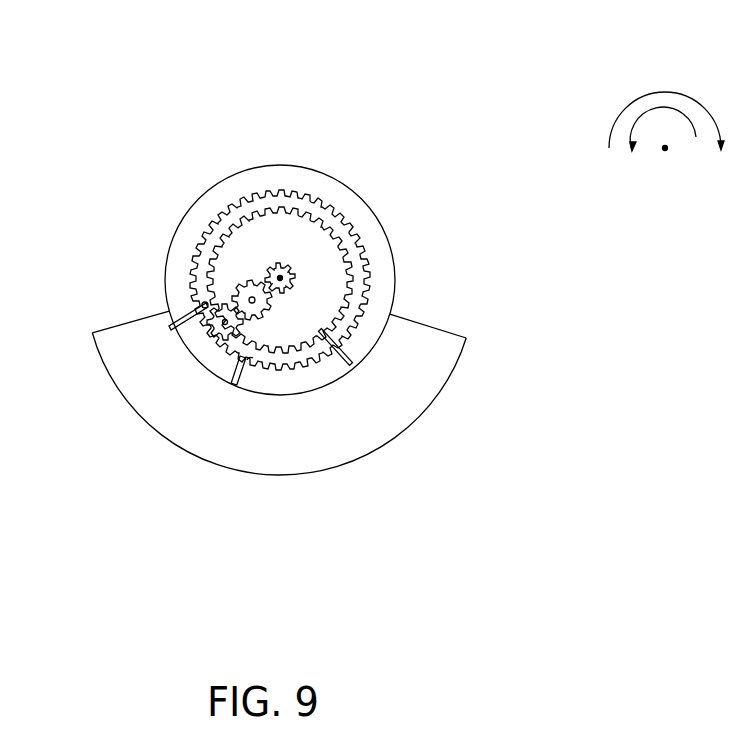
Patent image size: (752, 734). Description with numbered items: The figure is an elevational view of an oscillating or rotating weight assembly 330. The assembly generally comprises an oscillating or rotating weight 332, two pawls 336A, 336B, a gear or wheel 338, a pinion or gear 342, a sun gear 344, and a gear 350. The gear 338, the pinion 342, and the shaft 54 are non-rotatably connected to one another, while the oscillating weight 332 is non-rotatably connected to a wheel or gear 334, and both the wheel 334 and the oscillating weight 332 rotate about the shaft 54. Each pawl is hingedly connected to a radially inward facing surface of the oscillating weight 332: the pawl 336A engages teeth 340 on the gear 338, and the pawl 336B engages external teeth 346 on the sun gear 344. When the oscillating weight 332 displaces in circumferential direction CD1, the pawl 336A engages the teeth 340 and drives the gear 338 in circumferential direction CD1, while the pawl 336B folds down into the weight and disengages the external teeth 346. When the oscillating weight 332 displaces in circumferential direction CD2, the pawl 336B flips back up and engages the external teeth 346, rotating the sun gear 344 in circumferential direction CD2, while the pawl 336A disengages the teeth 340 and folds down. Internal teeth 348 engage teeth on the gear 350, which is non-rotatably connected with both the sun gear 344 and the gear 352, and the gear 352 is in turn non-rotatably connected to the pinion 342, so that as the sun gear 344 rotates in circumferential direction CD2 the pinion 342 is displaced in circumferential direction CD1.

The oscillating weight assembly 330 is at (88, 112).
The wheel 334 is at (232, 192).
The oscillating weight 332 is at (386, 425).
The teeth 340 is at (190, 290).
The gear 338 is at (228, 273).
The pinion 342 is at (281, 268).
The shaft 54 is at (291, 277).
The gear 352 is at (268, 318).
The gear 350 is at (220, 335).
The sun gear 344 is at (200, 312).
The external teeth 346 is at (200, 313).
The pawl 336A is at (362, 353).
The pawl 336B is at (247, 360).
The internal teeth 348 is at (253, 358).
The circumferential direction CD2 is at (672, 92).
The circumferential direction CD1 is at (690, 133).